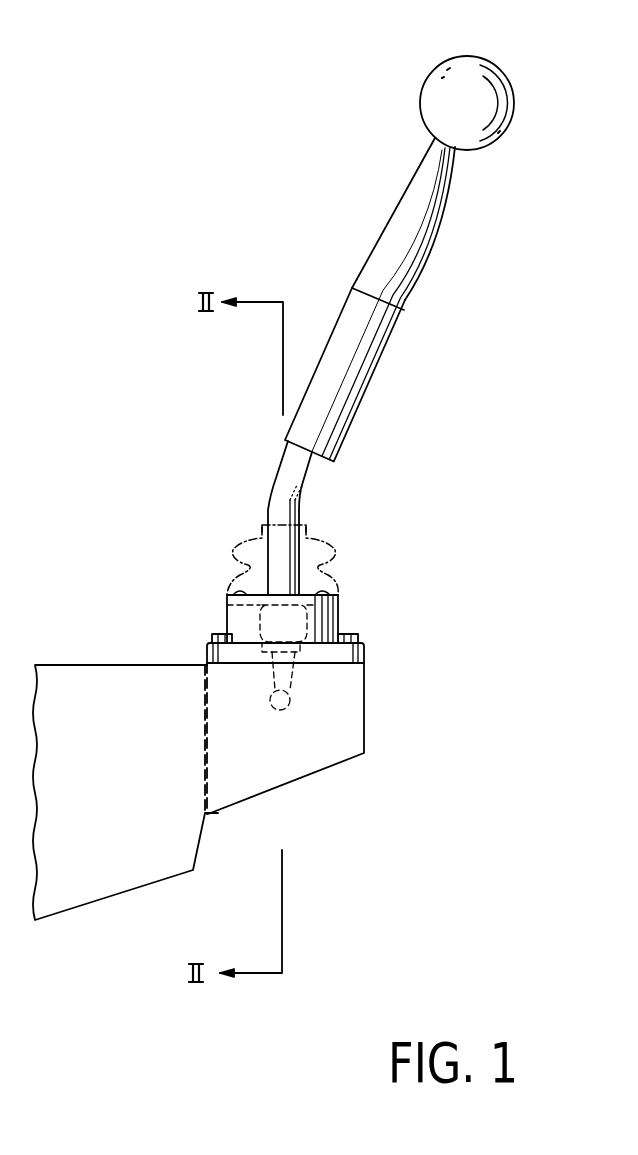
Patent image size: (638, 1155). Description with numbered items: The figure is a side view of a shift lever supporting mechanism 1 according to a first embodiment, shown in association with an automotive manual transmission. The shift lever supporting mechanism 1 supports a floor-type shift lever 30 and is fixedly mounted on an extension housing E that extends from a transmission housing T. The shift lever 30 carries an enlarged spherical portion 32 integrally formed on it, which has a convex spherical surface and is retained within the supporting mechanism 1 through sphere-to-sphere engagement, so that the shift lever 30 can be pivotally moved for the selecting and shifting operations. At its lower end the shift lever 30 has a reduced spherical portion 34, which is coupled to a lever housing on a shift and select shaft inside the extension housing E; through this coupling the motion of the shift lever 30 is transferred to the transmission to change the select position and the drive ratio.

The shift lever supporting mechanism 1 is at (341, 611).
The shift lever 30 is at (302, 488).
The enlarged spherical portion 32 is at (237, 615).
The reduced spherical portion 34 is at (292, 702).
The transmission housing T is at (128, 680).
The extension housing E is at (302, 763).